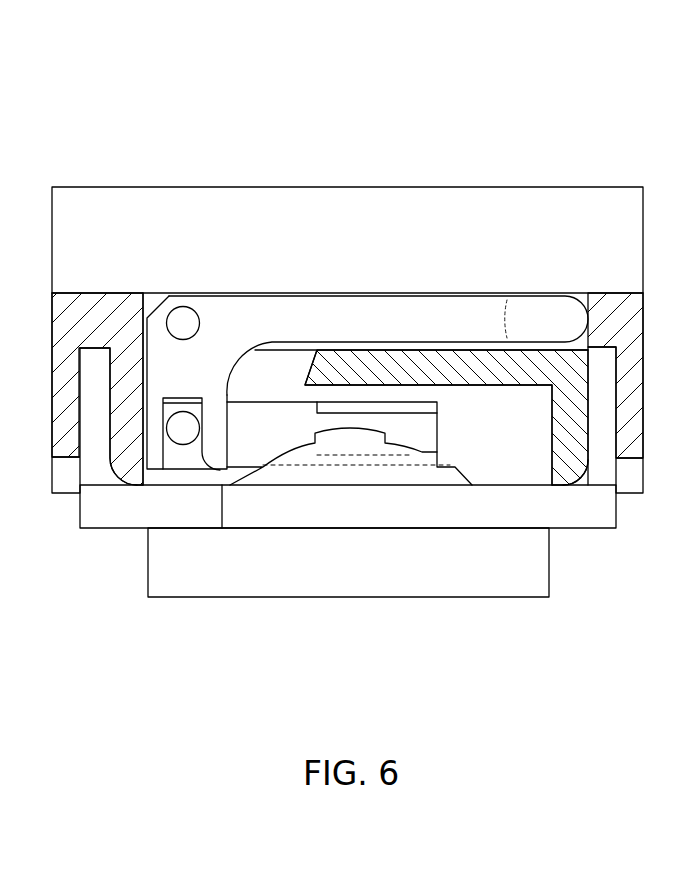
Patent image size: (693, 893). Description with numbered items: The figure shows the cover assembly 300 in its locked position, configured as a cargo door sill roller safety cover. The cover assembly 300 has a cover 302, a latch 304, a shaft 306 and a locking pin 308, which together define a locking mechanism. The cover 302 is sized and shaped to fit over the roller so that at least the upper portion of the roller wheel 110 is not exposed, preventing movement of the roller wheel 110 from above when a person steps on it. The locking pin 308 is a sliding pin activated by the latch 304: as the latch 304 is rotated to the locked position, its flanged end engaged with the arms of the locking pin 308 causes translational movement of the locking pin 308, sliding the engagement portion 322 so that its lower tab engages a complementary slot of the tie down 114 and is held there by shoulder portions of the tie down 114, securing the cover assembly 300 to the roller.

The cover assembly 300 is at (255, 137).
The cover 302 is at (102, 187).
The latch 304 is at (534, 310).
The shaft 306 is at (182, 323).
The locking pin 308 is at (437, 422).
The engagement portion 322 is at (440, 408).
The tie down 114 is at (297, 447).
The roller wheel 110 is at (437, 598).